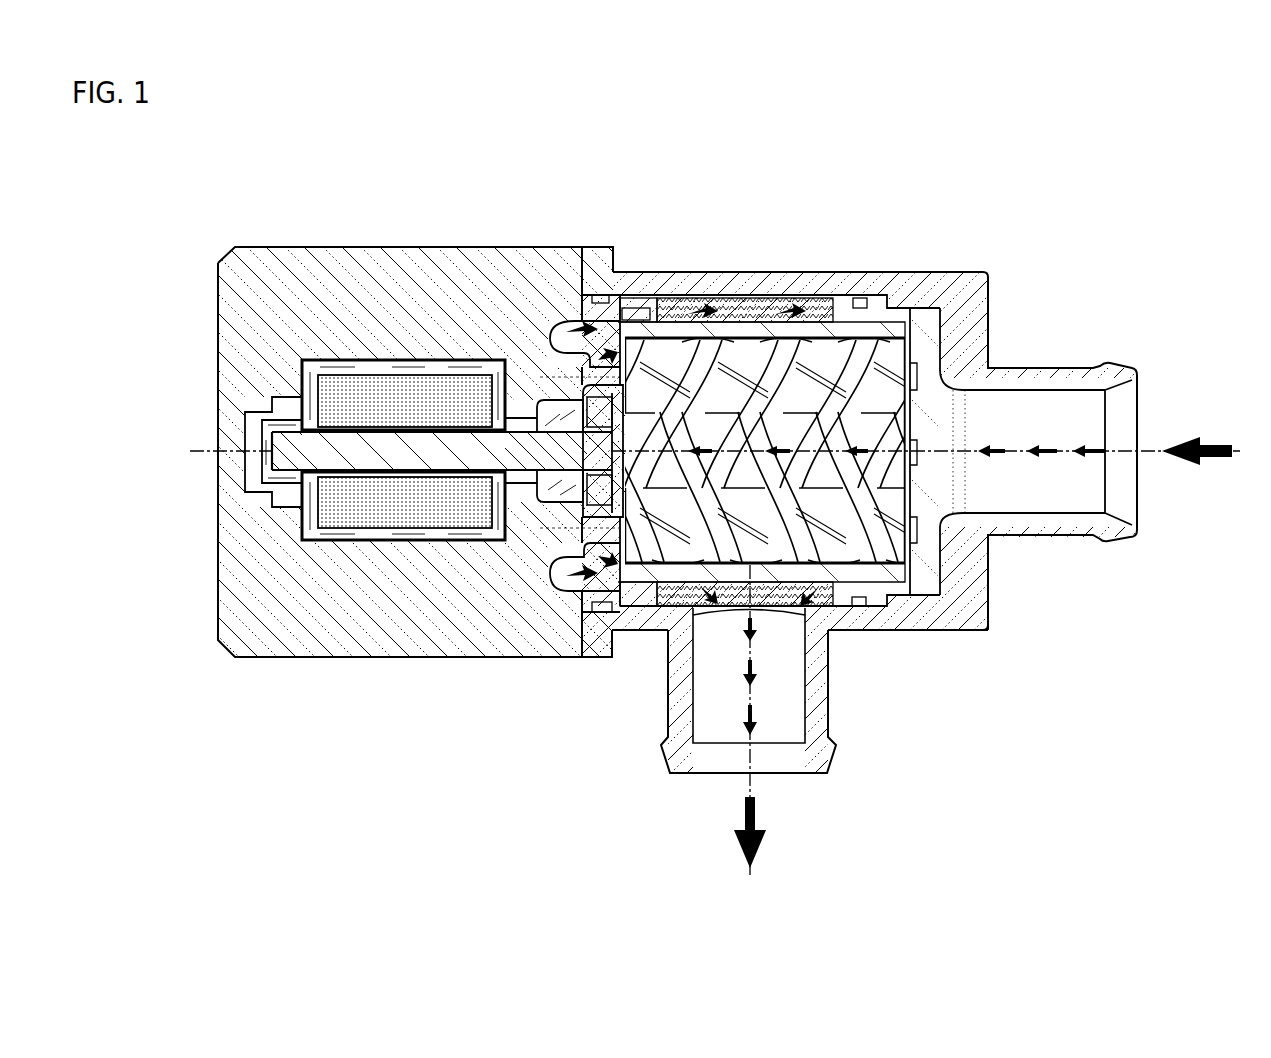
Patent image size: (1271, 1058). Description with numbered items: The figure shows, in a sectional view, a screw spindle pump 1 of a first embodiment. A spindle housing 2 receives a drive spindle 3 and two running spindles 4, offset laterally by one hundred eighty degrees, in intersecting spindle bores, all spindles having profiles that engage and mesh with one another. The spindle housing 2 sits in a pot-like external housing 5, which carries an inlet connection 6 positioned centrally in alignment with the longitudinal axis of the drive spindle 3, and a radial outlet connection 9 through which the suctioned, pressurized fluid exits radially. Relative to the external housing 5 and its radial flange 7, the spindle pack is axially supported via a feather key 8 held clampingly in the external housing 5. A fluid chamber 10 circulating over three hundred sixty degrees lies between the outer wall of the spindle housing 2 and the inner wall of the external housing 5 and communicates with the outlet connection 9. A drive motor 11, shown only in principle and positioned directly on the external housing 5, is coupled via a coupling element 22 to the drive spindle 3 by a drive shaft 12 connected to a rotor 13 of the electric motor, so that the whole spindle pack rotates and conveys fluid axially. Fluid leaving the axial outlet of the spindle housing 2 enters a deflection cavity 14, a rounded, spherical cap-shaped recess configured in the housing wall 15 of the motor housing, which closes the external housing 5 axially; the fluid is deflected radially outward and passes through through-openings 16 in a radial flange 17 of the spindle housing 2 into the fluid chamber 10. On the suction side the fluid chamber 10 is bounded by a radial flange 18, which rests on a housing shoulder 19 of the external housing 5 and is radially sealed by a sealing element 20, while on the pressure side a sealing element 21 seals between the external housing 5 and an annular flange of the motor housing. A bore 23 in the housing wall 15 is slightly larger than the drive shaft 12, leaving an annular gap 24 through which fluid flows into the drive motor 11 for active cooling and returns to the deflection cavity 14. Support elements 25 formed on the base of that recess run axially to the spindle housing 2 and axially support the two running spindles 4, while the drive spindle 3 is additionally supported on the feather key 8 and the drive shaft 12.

The screw spindle pump 1 is at (1027, 140).
The spindle housing 2 is at (900, 330).
The drive spindle 3 is at (877, 427).
The running spindles 4 is at (872, 538).
The external housing 5 is at (965, 287).
The inlet connection 6 is at (1120, 378).
The radial flange 7 is at (972, 593).
The feather key 8 is at (950, 600).
The outlet connection 9 is at (822, 748).
The fluid chamber 10 is at (667, 290).
The drive motor 11 is at (283, 623).
The drive shaft 12 is at (423, 452).
The rotor 13 is at (340, 390).
The deflection cavity 14 is at (575, 510).
The housing wall 15 is at (580, 583).
The through-openings 16 is at (645, 568).
The radial flange 17 is at (625, 606).
The radial flange 18 is at (866, 338).
The housing shoulder 19 is at (923, 575).
The sealing element 20 is at (858, 606).
The sealing element 21 is at (602, 295).
The coupling element 22 is at (590, 300).
The bore 23 is at (518, 412).
The annular gap 24 is at (497, 533).
The support elements 25 is at (563, 560).